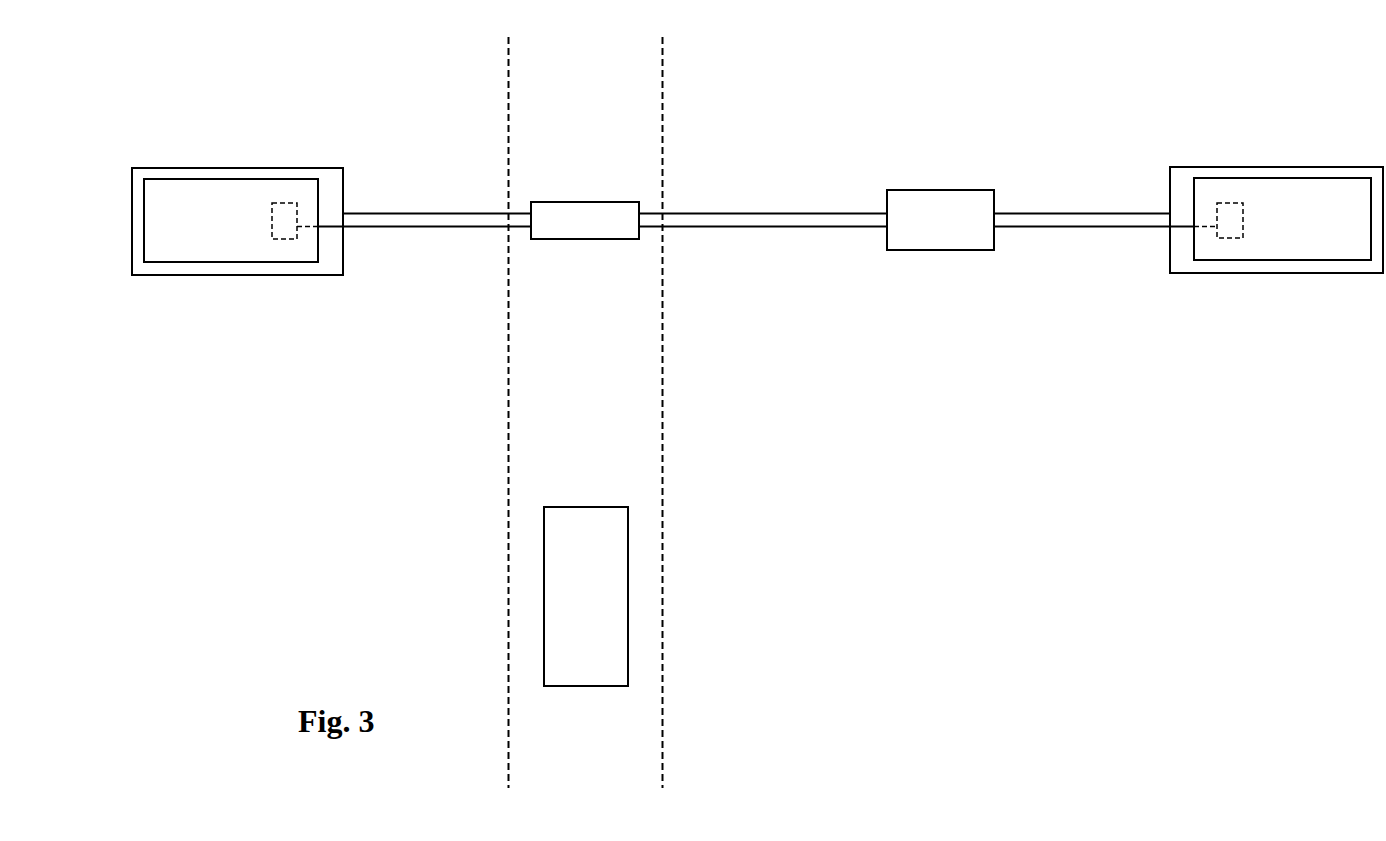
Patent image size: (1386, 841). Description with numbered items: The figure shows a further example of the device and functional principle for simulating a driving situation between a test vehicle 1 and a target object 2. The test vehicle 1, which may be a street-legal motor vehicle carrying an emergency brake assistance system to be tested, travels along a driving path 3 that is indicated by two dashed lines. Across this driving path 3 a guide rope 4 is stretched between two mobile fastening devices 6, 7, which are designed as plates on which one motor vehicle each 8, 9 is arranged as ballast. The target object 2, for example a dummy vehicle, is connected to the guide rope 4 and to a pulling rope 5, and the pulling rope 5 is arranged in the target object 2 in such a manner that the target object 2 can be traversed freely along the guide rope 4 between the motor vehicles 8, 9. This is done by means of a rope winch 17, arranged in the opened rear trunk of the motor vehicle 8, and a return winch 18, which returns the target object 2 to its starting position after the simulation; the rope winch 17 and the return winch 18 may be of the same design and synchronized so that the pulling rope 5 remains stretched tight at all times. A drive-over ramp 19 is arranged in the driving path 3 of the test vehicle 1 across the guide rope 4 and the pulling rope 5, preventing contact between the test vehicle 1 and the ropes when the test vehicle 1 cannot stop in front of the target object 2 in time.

The test vehicle 1 is at (603, 613).
The target object 2 is at (922, 207).
The driving path 3 is at (628, 414).
The guide rope 4 is at (721, 214).
The pulling rope 5 is at (744, 226).
The fastening device 6 is at (331, 179).
The fastening device 7 is at (1181, 191).
The motor vehicle 8 is at (226, 203).
The motor vehicle 9 is at (1265, 203).
The rope winch 17 is at (284, 214).
The return winch 18 is at (1229, 214).
The drive-over ramp 19 is at (567, 214).